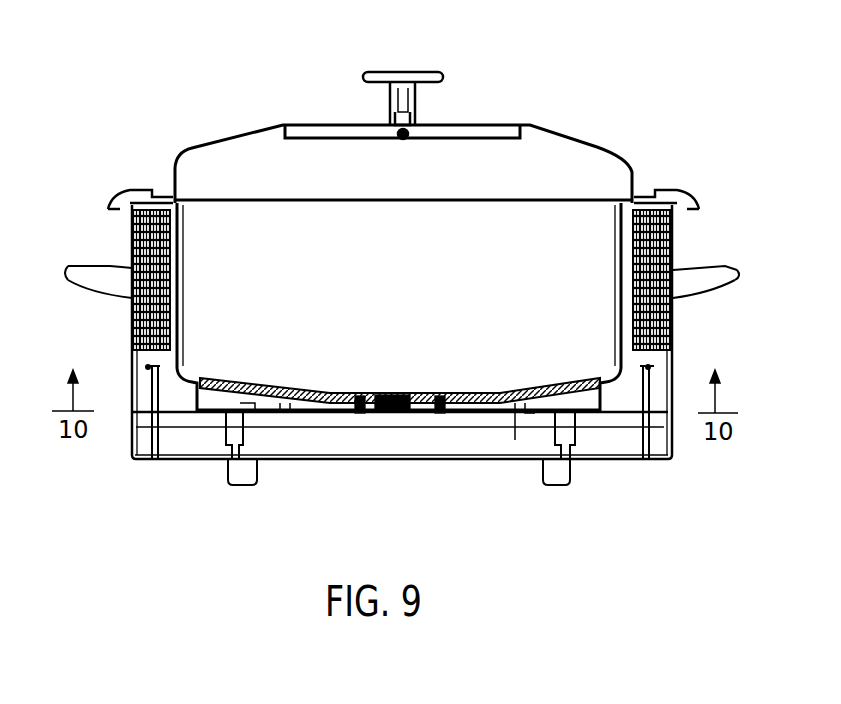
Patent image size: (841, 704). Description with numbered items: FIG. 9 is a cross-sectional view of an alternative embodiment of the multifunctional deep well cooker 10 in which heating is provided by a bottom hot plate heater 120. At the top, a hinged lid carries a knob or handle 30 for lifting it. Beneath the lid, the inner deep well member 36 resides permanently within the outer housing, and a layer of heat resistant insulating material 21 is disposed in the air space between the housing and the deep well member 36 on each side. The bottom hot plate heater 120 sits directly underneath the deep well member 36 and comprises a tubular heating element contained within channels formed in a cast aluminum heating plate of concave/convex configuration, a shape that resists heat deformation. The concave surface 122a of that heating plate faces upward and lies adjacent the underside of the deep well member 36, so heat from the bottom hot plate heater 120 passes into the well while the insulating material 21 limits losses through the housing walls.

The multifunctional deep well cooker 10 is at (512, 78).
The knob or handle 30 is at (363, 78).
The inner deep well member 36 is at (185, 269).
The heat resistant insulating material 21 is at (673, 322).
The concave surface of the heating plate 122a is at (352, 383).
The bottom hot plate heater 120 is at (343, 444).